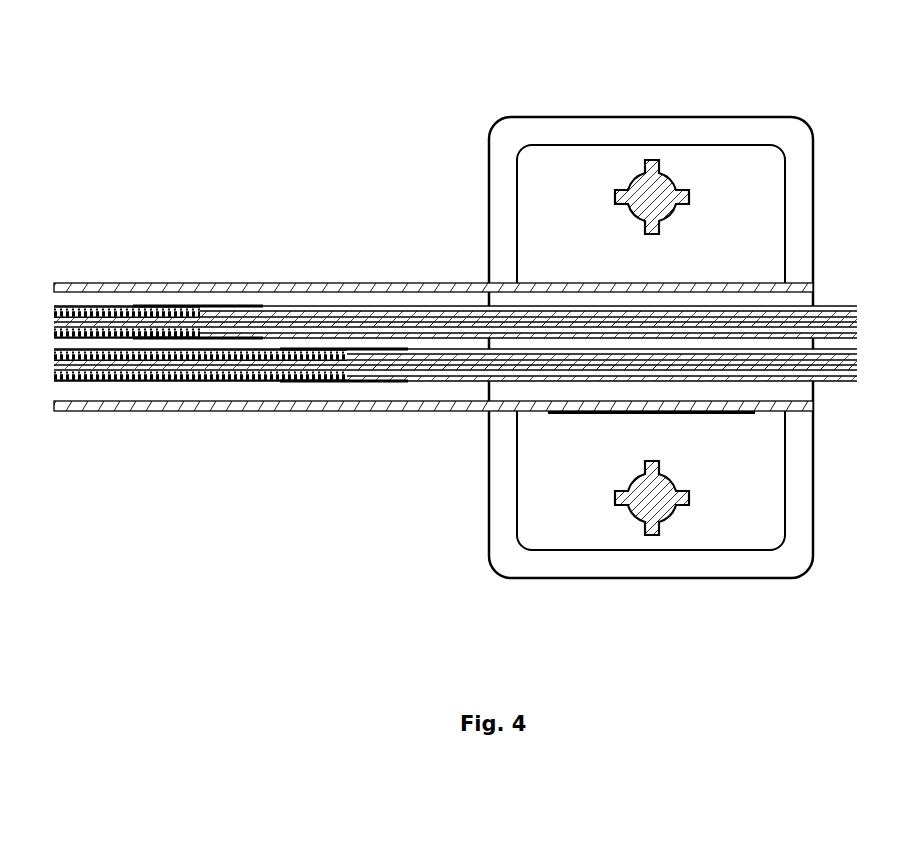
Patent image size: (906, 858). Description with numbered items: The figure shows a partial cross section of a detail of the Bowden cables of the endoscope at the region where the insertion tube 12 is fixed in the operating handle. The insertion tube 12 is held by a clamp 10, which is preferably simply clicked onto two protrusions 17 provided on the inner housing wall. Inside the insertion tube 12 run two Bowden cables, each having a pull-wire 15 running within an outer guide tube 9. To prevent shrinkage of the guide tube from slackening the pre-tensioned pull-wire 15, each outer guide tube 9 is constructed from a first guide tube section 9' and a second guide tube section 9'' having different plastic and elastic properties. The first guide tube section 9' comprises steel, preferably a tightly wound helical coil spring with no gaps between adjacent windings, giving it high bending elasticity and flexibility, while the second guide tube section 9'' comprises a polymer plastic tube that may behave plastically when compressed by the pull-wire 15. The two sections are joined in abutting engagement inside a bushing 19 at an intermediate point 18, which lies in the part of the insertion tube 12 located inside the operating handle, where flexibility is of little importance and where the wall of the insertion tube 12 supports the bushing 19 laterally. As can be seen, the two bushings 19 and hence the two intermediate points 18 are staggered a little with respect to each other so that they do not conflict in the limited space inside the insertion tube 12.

The outer guide tube 9 is at (455, 345).
The first guide tube section 9' is at (167, 343).
The second guide tube section 9'' is at (835, 345).
The clamp 10 is at (650, 117).
The insertion tube 12 is at (325, 283).
The pull-wire 15 is at (446, 322).
The protrusions 17 is at (676, 172).
The intermediate point 18 is at (197, 306).
The bushing 19 is at (155, 306).